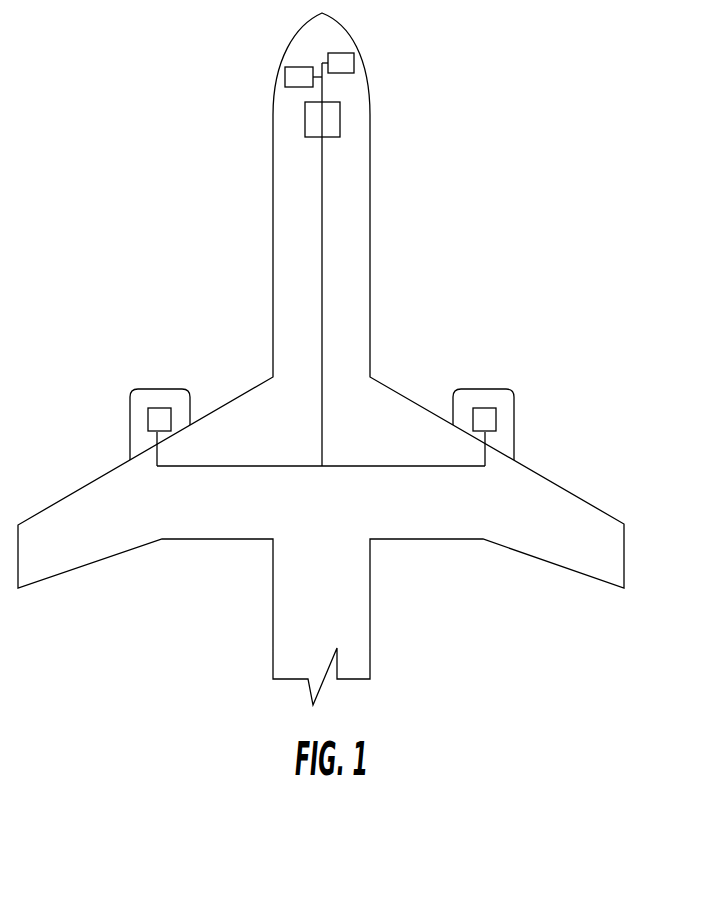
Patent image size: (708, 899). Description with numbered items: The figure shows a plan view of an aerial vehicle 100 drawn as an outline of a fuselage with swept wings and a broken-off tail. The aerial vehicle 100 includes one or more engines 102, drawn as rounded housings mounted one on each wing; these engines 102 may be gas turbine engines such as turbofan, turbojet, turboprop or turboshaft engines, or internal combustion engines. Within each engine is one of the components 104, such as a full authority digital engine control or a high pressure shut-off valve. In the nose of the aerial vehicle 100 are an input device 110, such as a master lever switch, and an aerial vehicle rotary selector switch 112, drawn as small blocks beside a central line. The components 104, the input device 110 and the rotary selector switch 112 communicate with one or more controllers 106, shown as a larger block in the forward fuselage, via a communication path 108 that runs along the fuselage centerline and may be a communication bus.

The aerial vehicle 100 is at (113, 102).
The engines 102 is at (157, 389).
The components 104 is at (148, 425).
The controllers 106 is at (340, 122).
The communication path 108 is at (318, 90).
The input device 110 is at (354, 63).
The aerial vehicle rotary selector switch 112 is at (285, 80).